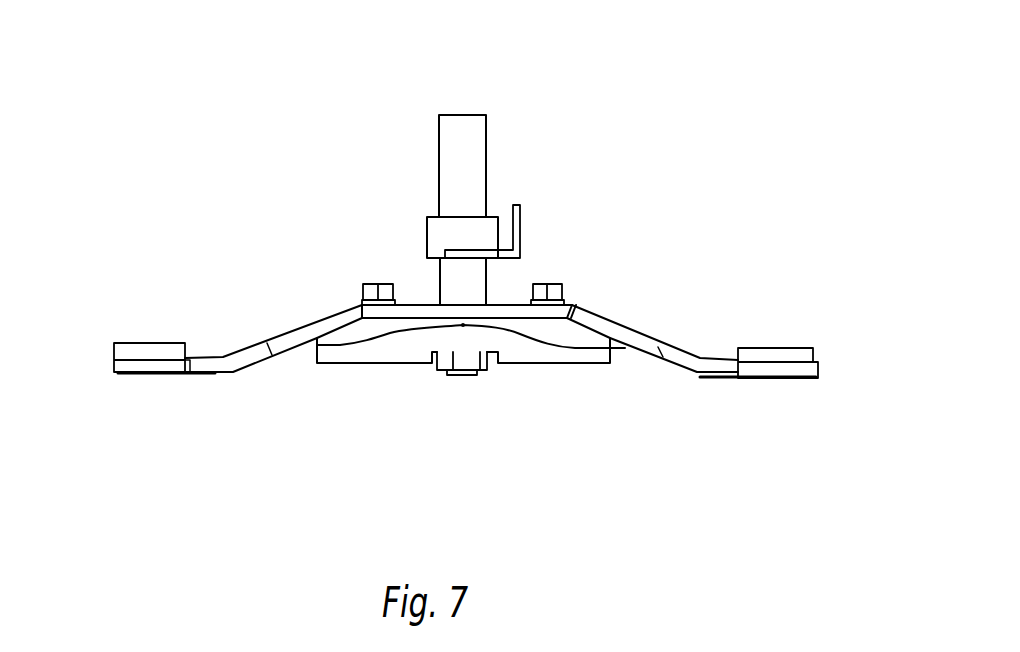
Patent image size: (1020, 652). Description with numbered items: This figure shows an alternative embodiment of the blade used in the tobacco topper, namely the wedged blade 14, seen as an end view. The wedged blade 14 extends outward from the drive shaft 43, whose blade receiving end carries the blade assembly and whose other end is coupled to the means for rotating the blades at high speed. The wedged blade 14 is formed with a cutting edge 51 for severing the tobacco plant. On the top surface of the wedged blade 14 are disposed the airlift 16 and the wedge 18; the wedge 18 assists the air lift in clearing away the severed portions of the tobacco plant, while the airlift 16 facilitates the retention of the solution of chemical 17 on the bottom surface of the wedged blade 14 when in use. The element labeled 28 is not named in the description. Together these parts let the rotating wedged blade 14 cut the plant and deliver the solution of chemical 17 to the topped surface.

The wedged blade 14 is at (623, 250).
The drive shaft 43 is at (478, 107).
The airlift 16 is at (110, 342).
The wedge 18 is at (813, 357).
The solution of chemical 17 is at (237, 376).
The cutting edge 51 is at (747, 383).
The nut 28 is at (440, 370).